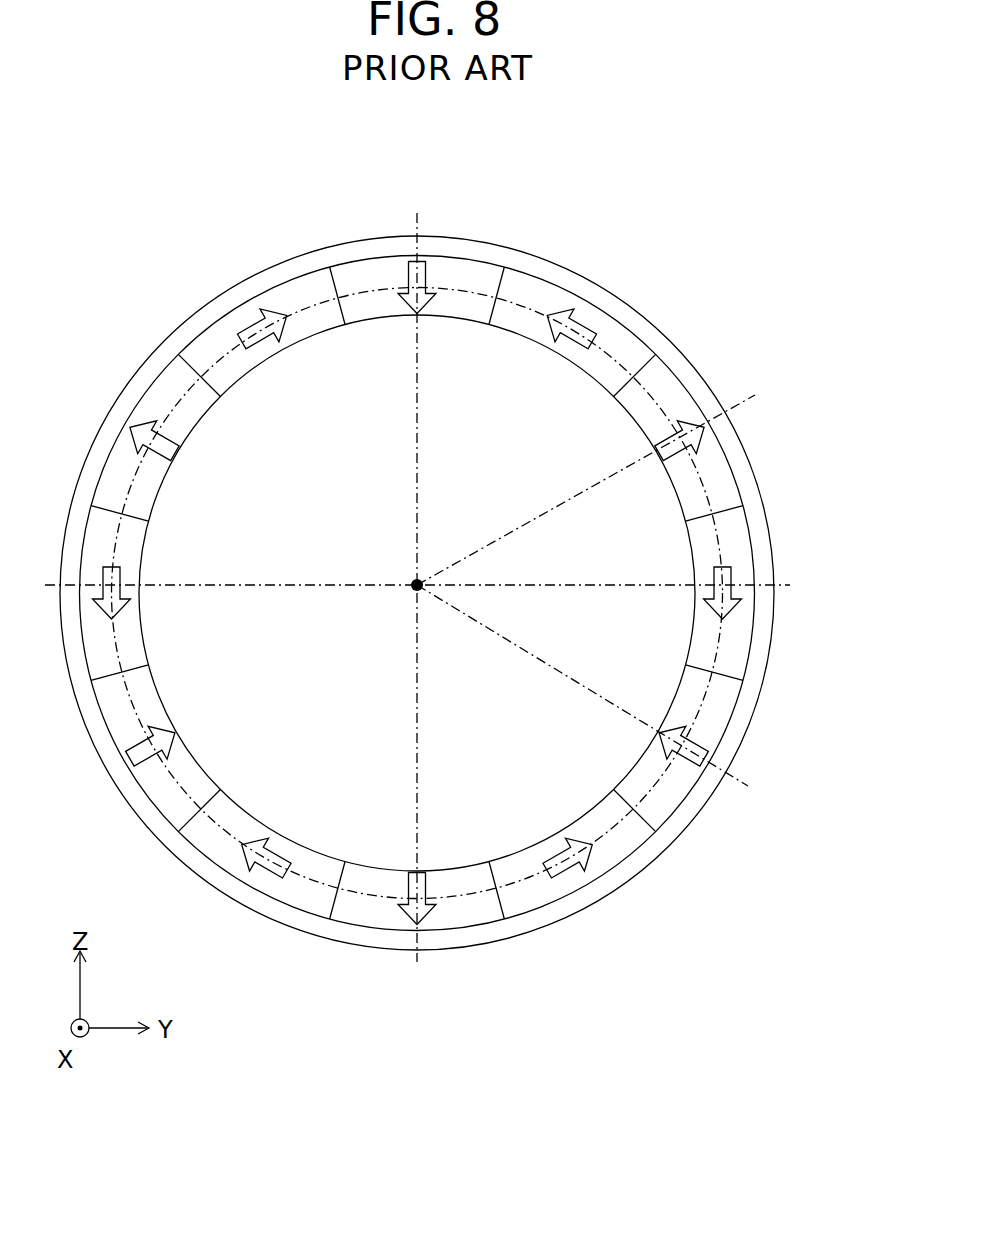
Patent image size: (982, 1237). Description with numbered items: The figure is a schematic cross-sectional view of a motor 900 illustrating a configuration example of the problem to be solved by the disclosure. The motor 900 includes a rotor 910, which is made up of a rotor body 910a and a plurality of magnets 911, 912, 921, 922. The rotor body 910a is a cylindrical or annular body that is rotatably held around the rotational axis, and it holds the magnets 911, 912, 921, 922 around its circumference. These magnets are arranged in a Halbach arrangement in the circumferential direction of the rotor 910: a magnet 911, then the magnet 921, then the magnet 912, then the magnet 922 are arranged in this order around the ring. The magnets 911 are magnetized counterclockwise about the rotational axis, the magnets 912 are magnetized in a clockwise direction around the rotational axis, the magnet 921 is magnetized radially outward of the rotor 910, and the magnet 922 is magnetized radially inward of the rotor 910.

The motor 900 is at (801, 133).
The rotor 910 is at (683, 216).
The rotor body 910a is at (710, 790).
The magnet 911 is at (625, 595).
The magnet 912 is at (762, 551).
The magnet 921 is at (732, 440).
The magnet 922 is at (611, 480).